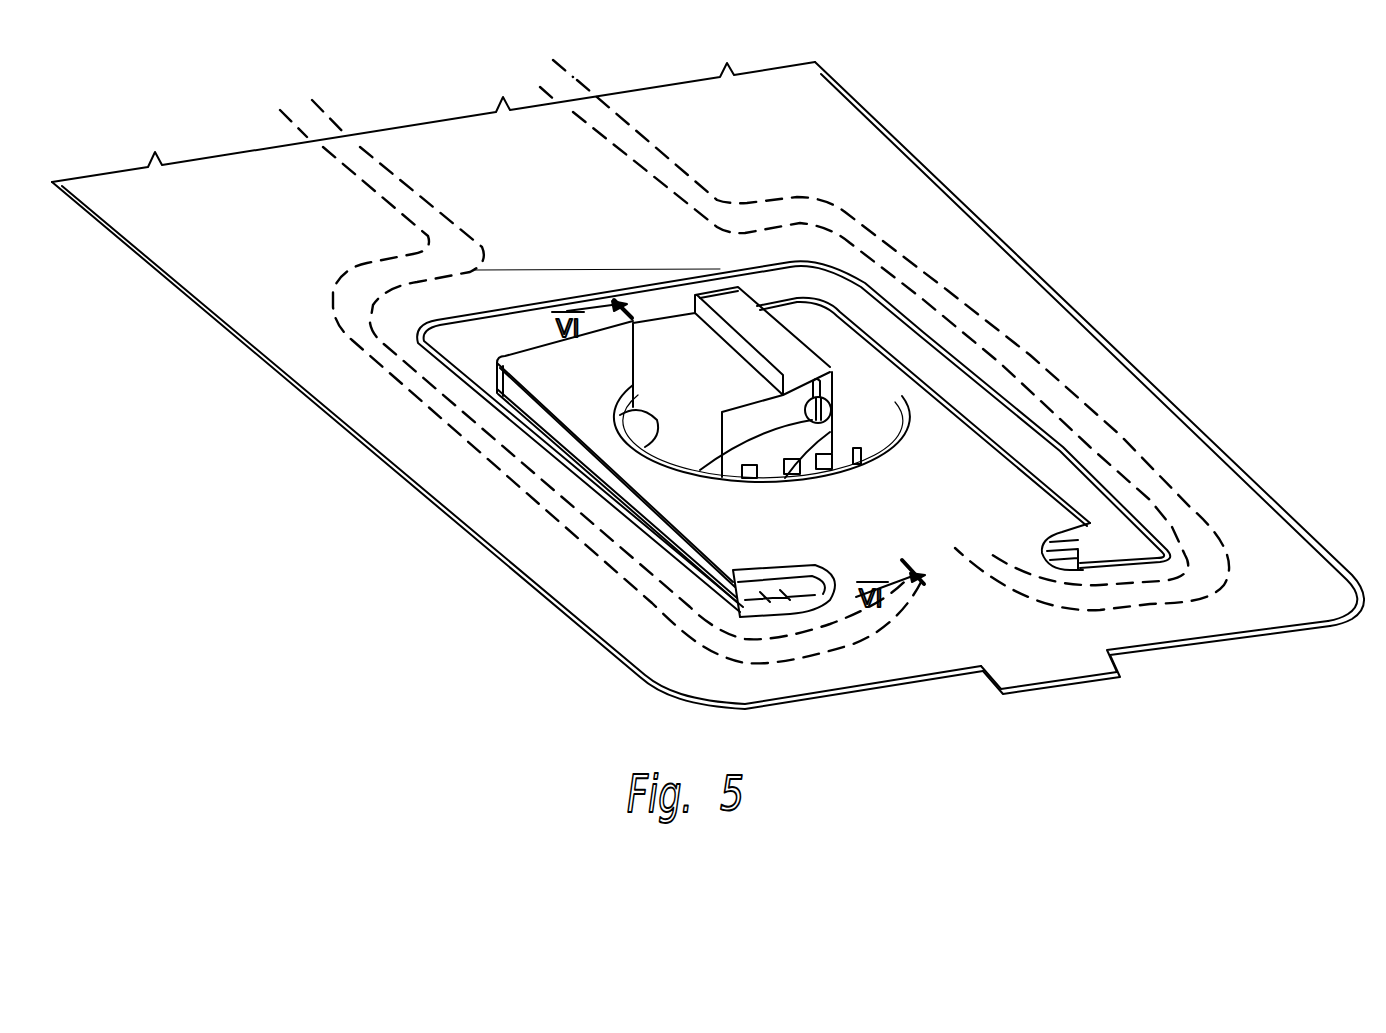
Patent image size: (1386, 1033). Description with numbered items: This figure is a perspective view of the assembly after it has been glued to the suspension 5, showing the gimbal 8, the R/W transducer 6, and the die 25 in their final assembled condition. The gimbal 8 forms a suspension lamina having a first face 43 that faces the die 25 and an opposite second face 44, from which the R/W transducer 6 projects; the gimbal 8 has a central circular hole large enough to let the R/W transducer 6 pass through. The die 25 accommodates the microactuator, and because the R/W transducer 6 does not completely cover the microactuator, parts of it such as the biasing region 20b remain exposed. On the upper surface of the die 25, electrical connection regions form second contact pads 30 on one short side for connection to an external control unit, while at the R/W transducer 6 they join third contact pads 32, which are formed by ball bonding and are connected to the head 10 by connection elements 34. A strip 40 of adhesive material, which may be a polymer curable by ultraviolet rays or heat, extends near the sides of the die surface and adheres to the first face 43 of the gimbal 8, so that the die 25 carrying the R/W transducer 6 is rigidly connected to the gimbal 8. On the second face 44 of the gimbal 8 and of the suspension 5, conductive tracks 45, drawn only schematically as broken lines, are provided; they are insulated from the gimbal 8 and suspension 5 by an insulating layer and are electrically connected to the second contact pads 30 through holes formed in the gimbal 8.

The suspension 5 is at (860, 144).
The R/W transducer 6 is at (796, 341).
The gimbal 8 is at (935, 408).
The head 10 is at (822, 383).
The biasing region 20b is at (613, 417).
The die 25 is at (537, 433).
The second contact pads 30 is at (813, 573).
The third contact pads 32 is at (838, 476).
The connection elements 34 is at (723, 410).
The strip of adhesive material 40 is at (588, 452).
The first face 43 is at (1262, 634).
The second face 44 is at (1229, 482).
The conductive tracks 45 is at (1060, 412).